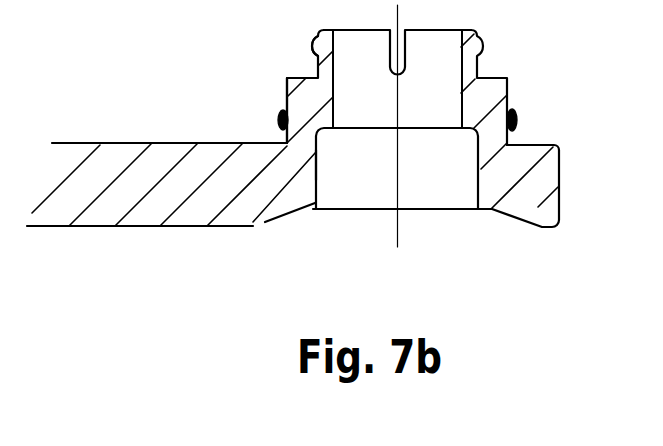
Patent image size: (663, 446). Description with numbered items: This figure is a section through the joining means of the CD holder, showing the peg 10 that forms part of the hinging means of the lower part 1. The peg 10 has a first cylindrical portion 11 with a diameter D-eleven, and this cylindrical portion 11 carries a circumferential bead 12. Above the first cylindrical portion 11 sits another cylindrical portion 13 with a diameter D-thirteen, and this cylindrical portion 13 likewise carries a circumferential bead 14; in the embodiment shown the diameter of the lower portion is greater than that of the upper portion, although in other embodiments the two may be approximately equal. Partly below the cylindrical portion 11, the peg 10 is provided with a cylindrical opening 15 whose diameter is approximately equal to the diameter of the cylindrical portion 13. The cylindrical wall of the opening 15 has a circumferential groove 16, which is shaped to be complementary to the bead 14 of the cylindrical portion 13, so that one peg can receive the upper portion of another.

The lower part 1 is at (147, 157).
The peg 10 is at (315, 40).
The first cylindrical portion 11 is at (285, 95).
The circumferential bead 12 is at (278, 118).
The cylindrical portion 13 is at (477, 73).
The circumferential bead 14 is at (325, 70).
The cylindrical opening 15 is at (316, 203).
The circumferential groove 16 is at (316, 177).